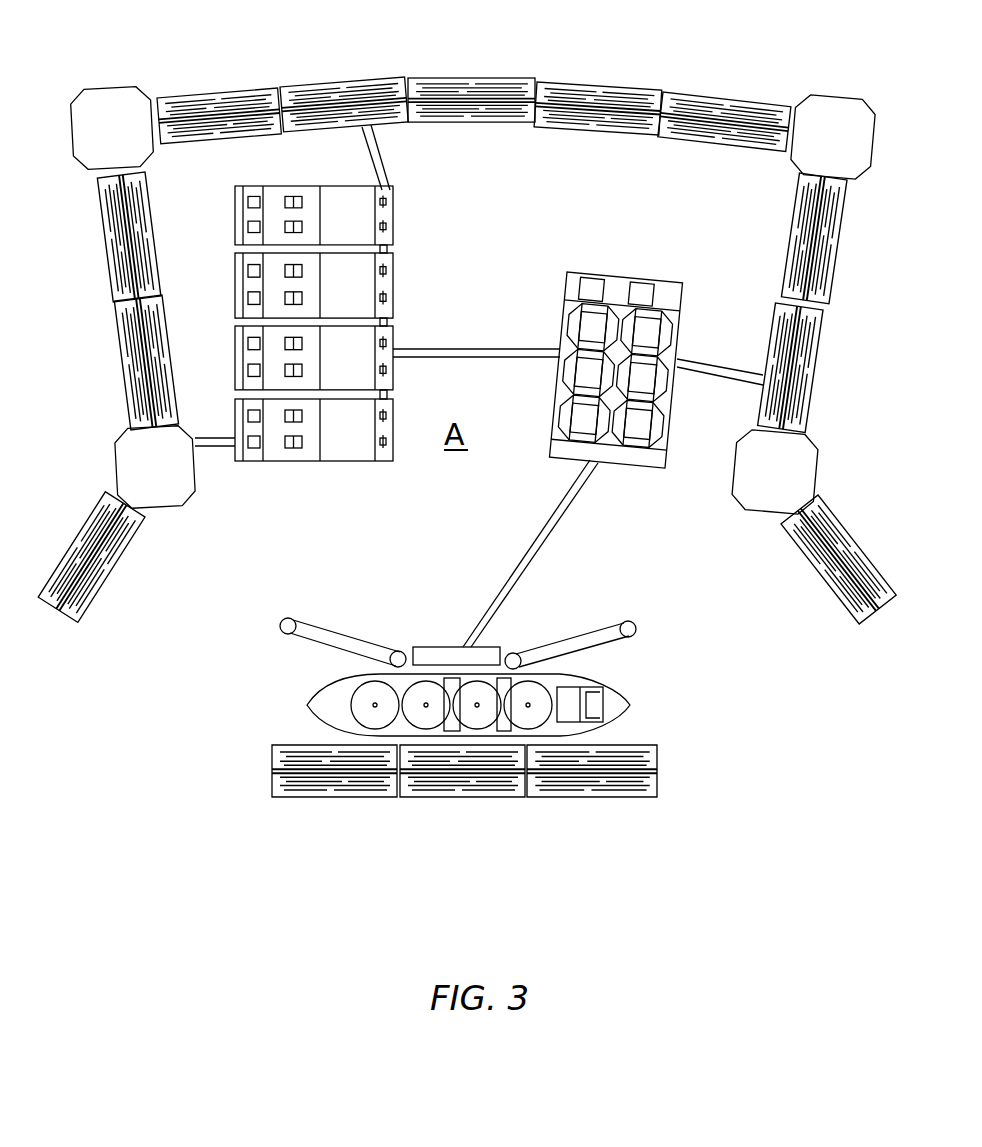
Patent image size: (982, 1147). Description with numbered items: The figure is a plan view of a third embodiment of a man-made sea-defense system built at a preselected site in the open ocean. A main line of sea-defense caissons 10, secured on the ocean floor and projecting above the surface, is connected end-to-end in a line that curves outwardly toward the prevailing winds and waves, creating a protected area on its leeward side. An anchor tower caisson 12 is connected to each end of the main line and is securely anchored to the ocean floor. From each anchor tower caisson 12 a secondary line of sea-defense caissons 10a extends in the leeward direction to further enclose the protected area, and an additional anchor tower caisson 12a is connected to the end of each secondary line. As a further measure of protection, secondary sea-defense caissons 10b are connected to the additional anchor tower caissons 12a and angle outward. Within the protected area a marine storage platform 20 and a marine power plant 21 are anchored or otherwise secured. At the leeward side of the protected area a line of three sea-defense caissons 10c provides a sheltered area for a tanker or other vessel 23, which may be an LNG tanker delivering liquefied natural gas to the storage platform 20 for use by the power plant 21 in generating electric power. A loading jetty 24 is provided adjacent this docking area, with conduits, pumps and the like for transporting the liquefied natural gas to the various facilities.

The sea-defense caisson 10 is at (232, 100).
The anchor tower caisson 12 is at (115, 108).
The secondary sea-defense caisson 10a is at (142, 258).
The additional anchor tower caisson 12a is at (168, 488).
The secondary sea-defense caisson 10b is at (105, 557).
The sea-defense caisson 10c is at (322, 785).
The marine storage platform 20 is at (637, 462).
The marine power plant 21 is at (343, 443).
The vessel 23 is at (615, 712).
The loading jetty 24 is at (438, 652).